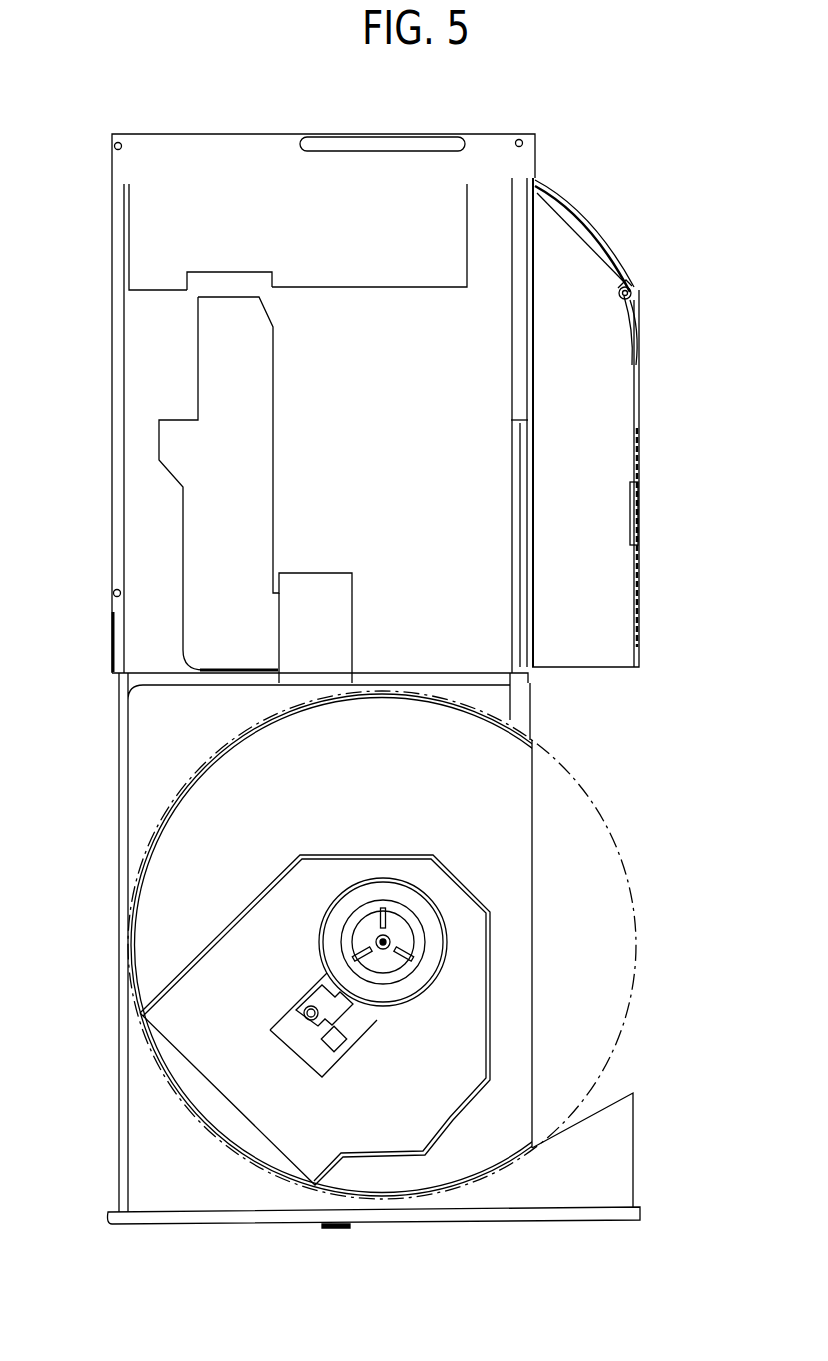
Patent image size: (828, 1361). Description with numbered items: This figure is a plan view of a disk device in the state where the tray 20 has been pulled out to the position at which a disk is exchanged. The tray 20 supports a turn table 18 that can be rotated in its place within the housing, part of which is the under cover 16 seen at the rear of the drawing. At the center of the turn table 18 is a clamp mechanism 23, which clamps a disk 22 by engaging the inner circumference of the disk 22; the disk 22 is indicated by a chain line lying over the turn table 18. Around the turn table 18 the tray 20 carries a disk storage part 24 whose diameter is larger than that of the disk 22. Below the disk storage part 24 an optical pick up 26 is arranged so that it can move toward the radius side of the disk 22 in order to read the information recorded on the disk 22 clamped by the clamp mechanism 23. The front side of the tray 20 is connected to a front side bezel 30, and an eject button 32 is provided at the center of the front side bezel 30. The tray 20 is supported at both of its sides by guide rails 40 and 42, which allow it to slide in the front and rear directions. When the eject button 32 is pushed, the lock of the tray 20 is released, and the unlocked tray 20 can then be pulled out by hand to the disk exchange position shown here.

The under cover 16 is at (640, 412).
The turn table 18 is at (433, 902).
The tray 20 is at (118, 1053).
The disk 22 is at (605, 827).
The clamp mechanism 23 is at (385, 902).
The disk storage part 24 is at (522, 765).
The optical pick up 26 is at (305, 997).
The front side bezel 30 is at (478, 1222).
The eject button 32 is at (340, 1229).
The guide rail 40 is at (112, 782).
The guide rail 42 is at (526, 676).